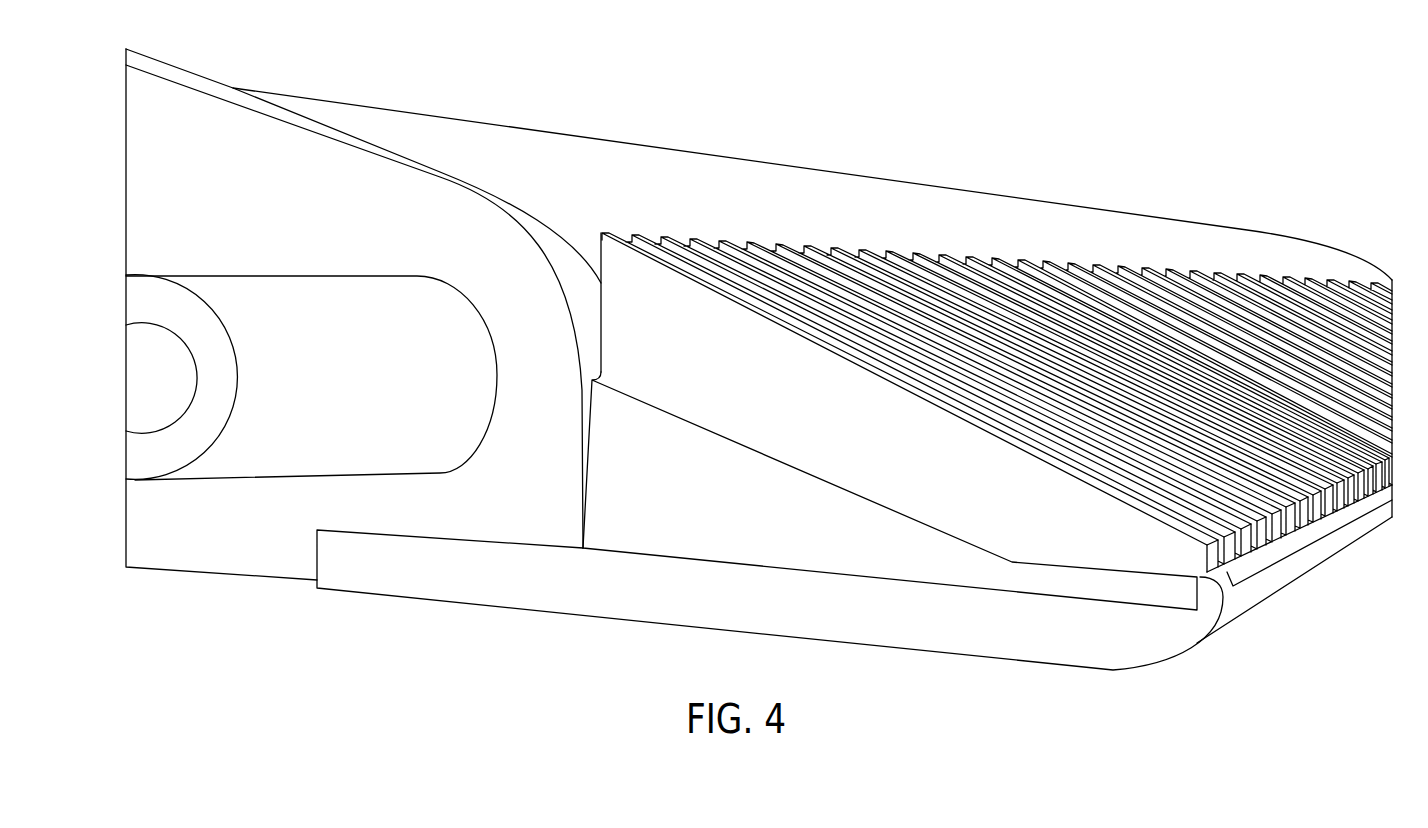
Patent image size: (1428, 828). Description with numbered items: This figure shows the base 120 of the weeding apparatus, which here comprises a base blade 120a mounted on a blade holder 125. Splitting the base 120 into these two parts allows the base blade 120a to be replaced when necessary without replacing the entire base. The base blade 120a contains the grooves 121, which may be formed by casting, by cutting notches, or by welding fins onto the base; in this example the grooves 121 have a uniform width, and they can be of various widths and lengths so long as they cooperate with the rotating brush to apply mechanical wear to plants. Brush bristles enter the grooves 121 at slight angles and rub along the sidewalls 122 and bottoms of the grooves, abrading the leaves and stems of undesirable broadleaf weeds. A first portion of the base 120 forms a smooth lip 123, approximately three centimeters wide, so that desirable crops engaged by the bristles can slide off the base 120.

The base 120 is at (866, 645).
The base blade 120a is at (927, 560).
The grooves 121 is at (1227, 563).
The sidewalls 122 is at (1108, 543).
The lip 123 is at (1267, 577).
The blade holder 125 is at (243, 555).